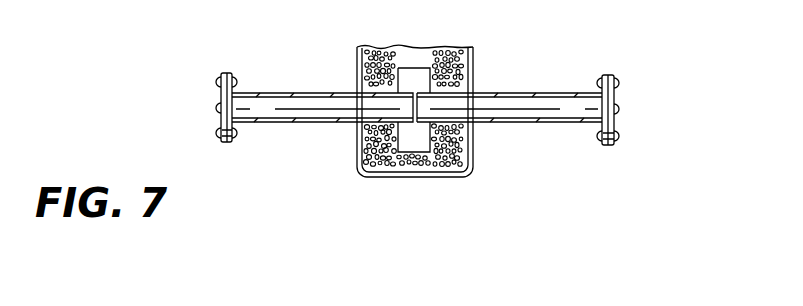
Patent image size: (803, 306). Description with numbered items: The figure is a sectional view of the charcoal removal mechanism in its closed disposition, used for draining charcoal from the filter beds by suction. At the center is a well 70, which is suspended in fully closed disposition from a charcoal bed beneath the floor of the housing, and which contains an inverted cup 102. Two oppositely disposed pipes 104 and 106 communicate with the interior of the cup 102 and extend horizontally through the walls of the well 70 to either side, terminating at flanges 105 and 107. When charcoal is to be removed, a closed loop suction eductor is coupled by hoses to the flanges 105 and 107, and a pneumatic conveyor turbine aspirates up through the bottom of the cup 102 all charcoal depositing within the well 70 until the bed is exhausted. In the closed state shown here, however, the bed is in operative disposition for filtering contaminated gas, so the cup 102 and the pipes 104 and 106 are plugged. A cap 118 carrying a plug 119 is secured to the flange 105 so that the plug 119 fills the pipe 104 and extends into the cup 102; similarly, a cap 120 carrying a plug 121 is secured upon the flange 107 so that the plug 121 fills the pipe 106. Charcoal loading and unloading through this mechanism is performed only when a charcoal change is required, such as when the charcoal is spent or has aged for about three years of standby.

The well 70 is at (445, 177).
The inverted cup 102 is at (447, 24).
The pipe 104 is at (333, 63).
The flange 105 is at (262, 43).
The pipe 106 is at (555, 65).
The flange 107 is at (602, 75).
The cap 118 is at (220, 98).
The plug 119 is at (305, 108).
The cap 120 is at (618, 95).
The plug 121 is at (548, 109).